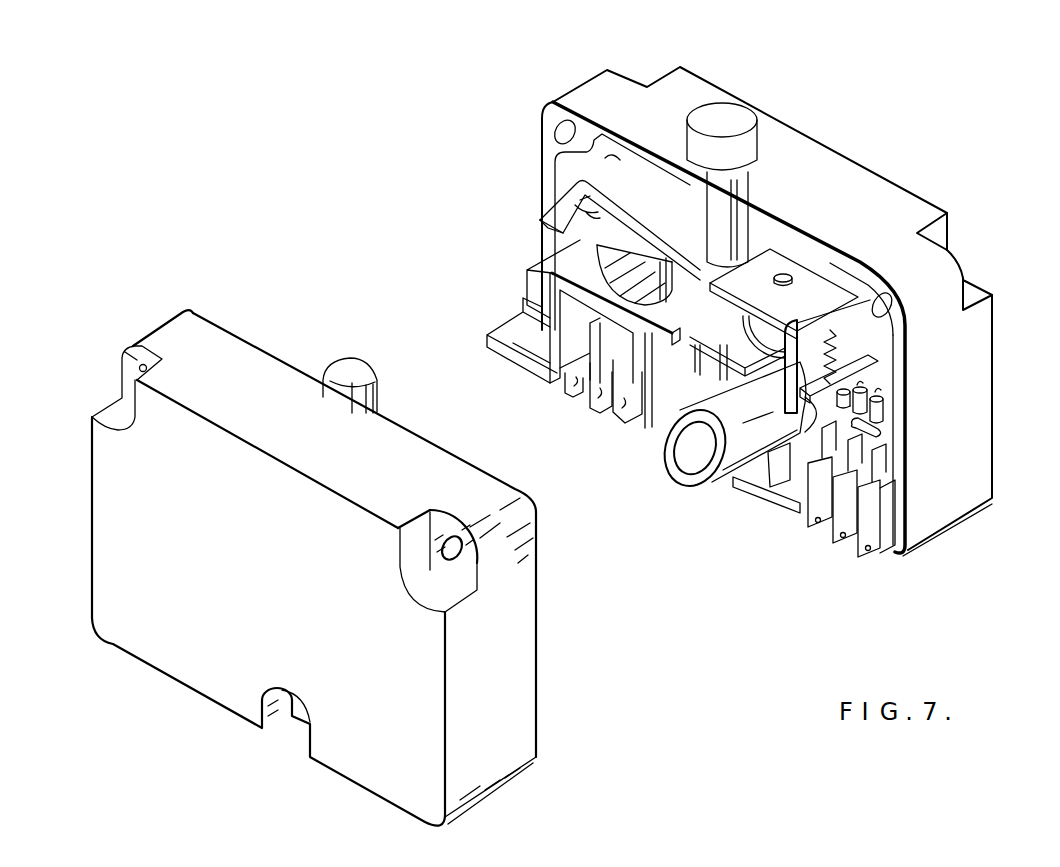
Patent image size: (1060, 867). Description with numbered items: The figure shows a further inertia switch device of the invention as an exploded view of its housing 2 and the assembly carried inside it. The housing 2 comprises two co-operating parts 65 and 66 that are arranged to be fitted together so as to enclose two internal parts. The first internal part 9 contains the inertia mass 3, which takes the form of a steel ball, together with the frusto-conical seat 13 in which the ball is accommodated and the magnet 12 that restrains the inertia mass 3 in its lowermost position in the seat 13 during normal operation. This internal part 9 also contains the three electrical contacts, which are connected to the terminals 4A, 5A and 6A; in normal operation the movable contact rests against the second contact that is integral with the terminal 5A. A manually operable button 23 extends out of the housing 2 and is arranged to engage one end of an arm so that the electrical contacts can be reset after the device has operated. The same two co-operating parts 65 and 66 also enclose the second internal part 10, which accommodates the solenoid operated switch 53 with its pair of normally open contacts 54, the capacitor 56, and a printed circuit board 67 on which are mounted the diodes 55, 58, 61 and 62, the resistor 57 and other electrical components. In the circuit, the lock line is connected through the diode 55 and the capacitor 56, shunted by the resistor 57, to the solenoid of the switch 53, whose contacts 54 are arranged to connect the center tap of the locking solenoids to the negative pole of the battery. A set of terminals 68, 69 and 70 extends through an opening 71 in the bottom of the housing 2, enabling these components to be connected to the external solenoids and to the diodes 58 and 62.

The housing 2 is at (528, 722).
The inertia mass 3 is at (668, 280).
The terminal 4A is at (623, 435).
The terminal 5A is at (587, 430).
The terminal 6A is at (573, 398).
The internal part 9 is at (562, 172).
The internal part 10 is at (885, 350).
The magnet 12 is at (660, 430).
The seat 13 is at (637, 252).
The manually operable button 23 is at (698, 121).
The solenoid operated switch 53 is at (823, 265).
The normally open contacts 54 is at (755, 330).
The diode 55 is at (897, 437).
The capacitor 56 is at (740, 460).
The resistor 57 is at (872, 296).
The diode 58 is at (892, 374).
The diode 61 is at (880, 395).
The diode 62 is at (893, 422).
The co-operating part 65 is at (527, 628).
The co-operating part 66 is at (985, 450).
The printed circuit board 67 is at (776, 477).
The terminal 68 is at (865, 560).
The terminal 69 is at (840, 543).
The terminal 70 is at (815, 533).
The opening 71 is at (878, 558).